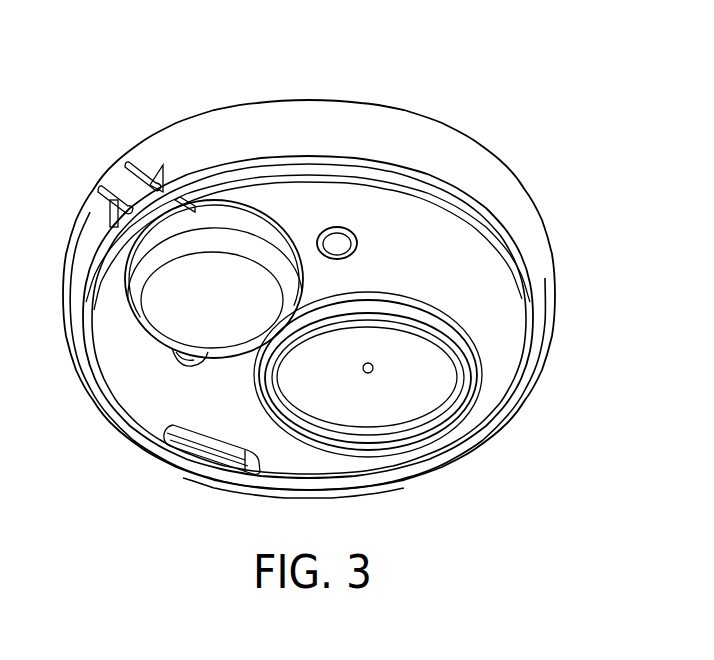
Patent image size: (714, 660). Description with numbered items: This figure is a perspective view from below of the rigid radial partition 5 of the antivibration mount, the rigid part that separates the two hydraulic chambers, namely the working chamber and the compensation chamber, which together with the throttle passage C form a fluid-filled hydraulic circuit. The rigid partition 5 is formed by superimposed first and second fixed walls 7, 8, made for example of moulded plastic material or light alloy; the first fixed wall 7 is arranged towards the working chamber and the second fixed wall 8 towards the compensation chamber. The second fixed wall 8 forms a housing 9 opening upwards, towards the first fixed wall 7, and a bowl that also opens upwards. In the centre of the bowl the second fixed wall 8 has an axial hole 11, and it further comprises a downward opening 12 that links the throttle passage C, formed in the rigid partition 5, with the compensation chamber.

The rigid radial partition 5 is at (472, 102).
The first fixed wall 7 is at (240, 138).
The second fixed wall 8 is at (497, 325).
The housing 9 is at (177, 323).
The axial hole 11 is at (371, 374).
The downward opening 12 is at (217, 467).
The throttle passage C is at (200, 440).